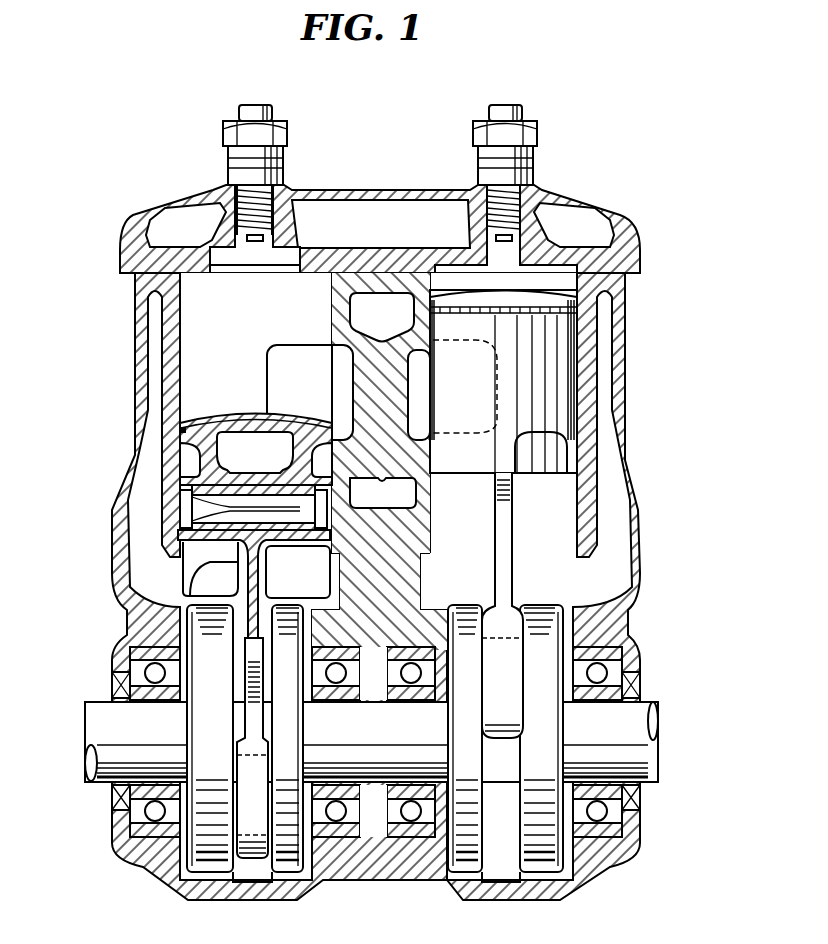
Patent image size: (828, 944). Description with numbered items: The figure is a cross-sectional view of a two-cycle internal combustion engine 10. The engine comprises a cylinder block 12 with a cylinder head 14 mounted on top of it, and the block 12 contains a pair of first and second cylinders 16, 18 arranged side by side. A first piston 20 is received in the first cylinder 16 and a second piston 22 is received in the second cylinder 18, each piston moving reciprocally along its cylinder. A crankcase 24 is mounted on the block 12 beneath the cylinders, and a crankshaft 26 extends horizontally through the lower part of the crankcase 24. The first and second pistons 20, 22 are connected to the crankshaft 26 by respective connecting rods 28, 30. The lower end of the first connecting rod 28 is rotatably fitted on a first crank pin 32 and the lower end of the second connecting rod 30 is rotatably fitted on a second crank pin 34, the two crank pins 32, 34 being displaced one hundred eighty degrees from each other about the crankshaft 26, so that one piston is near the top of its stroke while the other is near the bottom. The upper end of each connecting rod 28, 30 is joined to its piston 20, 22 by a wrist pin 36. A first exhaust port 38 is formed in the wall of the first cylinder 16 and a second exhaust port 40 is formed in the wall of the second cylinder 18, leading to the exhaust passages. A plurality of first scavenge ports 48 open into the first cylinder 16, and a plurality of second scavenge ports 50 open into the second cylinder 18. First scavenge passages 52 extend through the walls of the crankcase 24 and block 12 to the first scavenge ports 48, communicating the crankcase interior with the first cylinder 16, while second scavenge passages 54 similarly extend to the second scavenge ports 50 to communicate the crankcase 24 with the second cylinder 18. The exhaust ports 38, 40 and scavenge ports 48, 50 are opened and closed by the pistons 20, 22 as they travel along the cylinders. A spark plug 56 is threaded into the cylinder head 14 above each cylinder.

The two-cycle internal combustion engine 10 is at (558, 121).
The cylinder block 12 is at (638, 500).
The cylinder head 14 is at (598, 218).
The first cylinder 16 is at (178, 305).
The second cylinder 18 is at (576, 339).
The first piston 20 is at (185, 457).
The second piston 22 is at (557, 383).
The crankcase 24 is at (630, 623).
The crankshaft 26 is at (100, 776).
The first connecting rod 28 is at (259, 581).
The second connecting rod 30 is at (513, 546).
The first crank pin 32 is at (242, 790).
The second crank pin 34 is at (512, 690).
The wrist pin 36 is at (233, 504).
The first exhaust port 38 is at (268, 370).
The second exhaust port 40 is at (498, 346).
The first scavenge ports 48 is at (184, 413).
The second scavenge ports 50 is at (573, 424).
The first scavenge passages 52 is at (152, 573).
The second scavenge passages 54 is at (612, 543).
The spark plug 56 is at (287, 151).